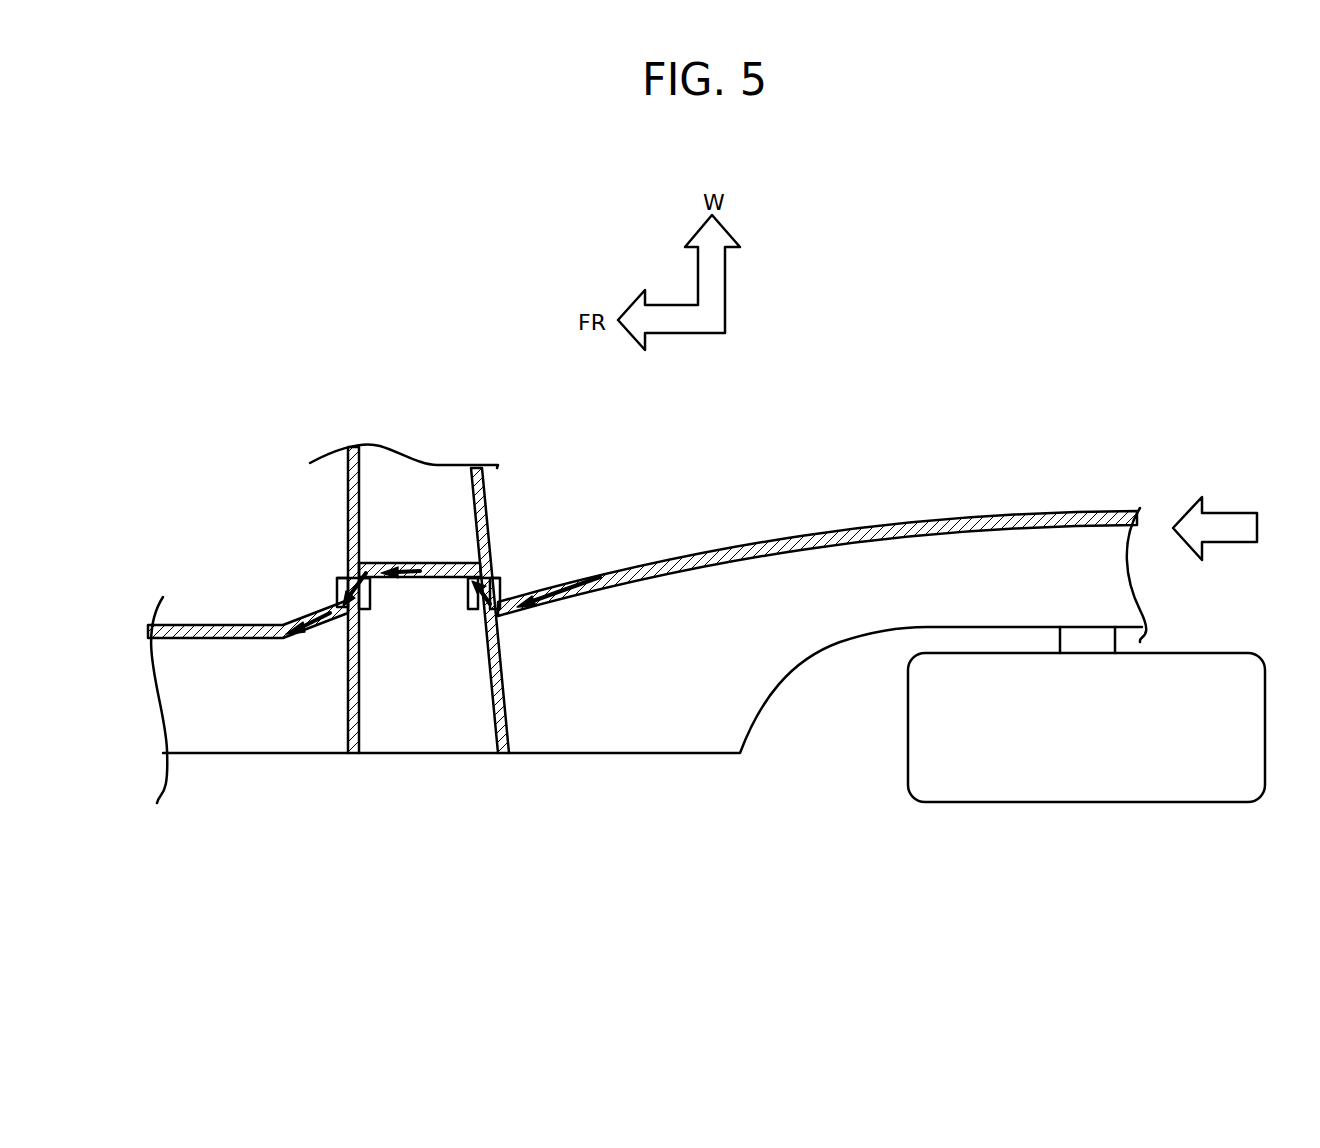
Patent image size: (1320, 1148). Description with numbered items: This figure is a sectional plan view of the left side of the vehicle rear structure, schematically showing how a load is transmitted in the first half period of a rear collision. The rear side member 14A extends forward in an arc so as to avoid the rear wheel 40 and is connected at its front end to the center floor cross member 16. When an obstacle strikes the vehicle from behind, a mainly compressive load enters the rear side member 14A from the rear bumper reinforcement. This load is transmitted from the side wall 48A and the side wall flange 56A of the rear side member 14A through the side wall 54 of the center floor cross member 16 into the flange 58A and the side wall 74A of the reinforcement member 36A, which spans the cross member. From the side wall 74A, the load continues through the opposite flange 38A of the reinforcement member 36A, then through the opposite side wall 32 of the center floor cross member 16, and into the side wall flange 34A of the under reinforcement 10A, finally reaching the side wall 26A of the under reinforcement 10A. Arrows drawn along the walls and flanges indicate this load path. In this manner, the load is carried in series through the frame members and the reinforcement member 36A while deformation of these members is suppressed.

The under reinforcement 10A is at (275, 787).
The rear side member 14A is at (645, 795).
The center floor cross member 16 is at (428, 800).
The side wall 26A is at (210, 623).
The opposite side wall 32 is at (347, 517).
The side wall flange 34A is at (335, 592).
The reinforcement member 36A is at (442, 552).
The opposite flange 38A is at (372, 592).
The rear wheel 40 is at (1087, 802).
The side wall 48A is at (614, 568).
The side wall 54 is at (485, 493).
The side wall flange 56A is at (510, 590).
The flange 58A is at (463, 597).
The side wall 74A is at (425, 563).